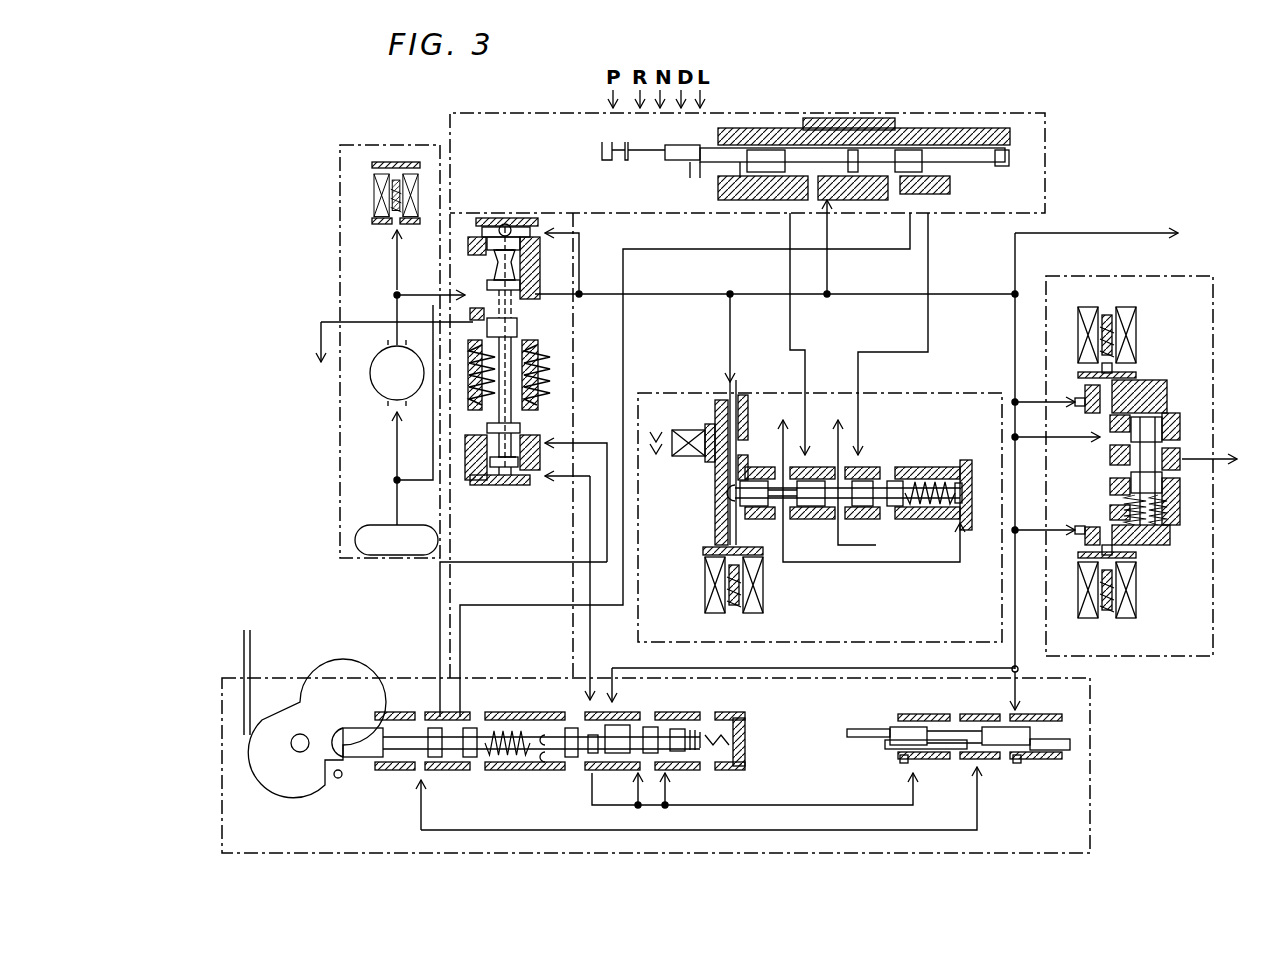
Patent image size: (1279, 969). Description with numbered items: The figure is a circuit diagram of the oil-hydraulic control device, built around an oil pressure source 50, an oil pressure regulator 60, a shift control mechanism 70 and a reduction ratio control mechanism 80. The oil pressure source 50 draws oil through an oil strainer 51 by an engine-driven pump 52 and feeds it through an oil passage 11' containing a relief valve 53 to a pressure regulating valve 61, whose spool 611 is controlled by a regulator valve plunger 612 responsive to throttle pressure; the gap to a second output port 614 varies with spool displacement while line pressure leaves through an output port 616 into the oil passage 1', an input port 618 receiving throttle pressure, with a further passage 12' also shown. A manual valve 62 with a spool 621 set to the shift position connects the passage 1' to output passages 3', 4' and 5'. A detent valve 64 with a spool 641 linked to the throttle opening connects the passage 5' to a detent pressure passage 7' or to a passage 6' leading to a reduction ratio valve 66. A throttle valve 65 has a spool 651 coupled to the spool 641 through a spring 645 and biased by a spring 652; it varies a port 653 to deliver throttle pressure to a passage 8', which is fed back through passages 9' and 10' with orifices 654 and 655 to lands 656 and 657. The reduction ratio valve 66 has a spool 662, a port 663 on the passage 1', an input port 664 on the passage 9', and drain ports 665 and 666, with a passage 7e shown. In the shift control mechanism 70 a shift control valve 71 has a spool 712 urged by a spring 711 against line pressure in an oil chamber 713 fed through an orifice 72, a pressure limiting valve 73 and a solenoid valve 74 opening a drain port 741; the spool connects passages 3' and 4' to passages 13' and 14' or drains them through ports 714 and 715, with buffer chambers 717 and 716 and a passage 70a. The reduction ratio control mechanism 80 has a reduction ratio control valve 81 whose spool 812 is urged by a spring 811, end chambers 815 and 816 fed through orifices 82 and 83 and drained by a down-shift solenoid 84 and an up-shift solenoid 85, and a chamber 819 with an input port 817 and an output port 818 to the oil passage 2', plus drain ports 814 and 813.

The oil pressure source 50 is at (362, 145).
The oil strainer 51 is at (376, 525).
The pump 52 is at (373, 358).
The relief valve 53 is at (398, 204).
The oil pressure regulator 60 is at (354, 672).
The pressure regulating valve 61 is at (514, 222).
The spool 611 is at (518, 330).
The regulator valve plunger 612 is at (520, 420).
The second output port 614 is at (470, 324).
The output port 616 is at (519, 256).
The input port 618 is at (522, 485).
The manual valve 62 is at (767, 128).
The spool 621 is at (686, 142).
The detent valve 64 is at (449, 770).
The spool 641 is at (372, 758).
The spring 645 is at (524, 714).
The throttle valve 65 is at (571, 760).
The spool 651 is at (556, 762).
The spring 652 is at (731, 756).
The port 653 is at (620, 722).
The orifice 654 is at (666, 812).
The orifice 655 is at (600, 758).
The land 656 is at (682, 729).
The land 657 is at (650, 726).
The reduction ratio valve 66 is at (1044, 758).
The spool 662 is at (858, 726).
The port 663 is at (1030, 720).
The input port 664 is at (904, 766).
The drain port 665 is at (956, 761).
The drain port 666 is at (890, 752).
The shift control mechanism 70 is at (936, 384).
The oil passage 70a is at (888, 720).
The shift control valve 71 is at (900, 477).
The spring 711 is at (945, 480).
The spool 712 is at (783, 478).
The oil chamber 713 is at (730, 494).
The drain port 714 is at (776, 516).
The drain port 715 is at (826, 517).
The oil chamber 716 is at (882, 518).
The oil chamber 717 is at (956, 518).
The orifice 72 is at (743, 412).
The pressure limiting valve 73 is at (678, 426).
The solenoid valve 74 is at (702, 588).
The drain port 741 is at (708, 543).
The oil passage 7e is at (845, 736).
The reduction ratio control mechanism 80 is at (1190, 276).
The reduction ratio control valve 81 is at (1164, 530).
The spring 811 is at (1173, 496).
The spool 812 is at (1170, 400).
The drain port 813 is at (1111, 505).
The drain port 814 is at (1111, 482).
The oil chamber 815 is at (1144, 542).
The oil chamber 816 is at (1150, 386).
The input port 817 is at (1112, 436).
The output port 818 is at (1170, 452).
The oil chamber 819 is at (1108, 459).
The orifice 82 is at (1078, 528).
The orifice 83 is at (1076, 400).
The down-shift solenoid 84 is at (1140, 604).
The up-shift solenoid 85 is at (1136, 314).
The oil passage 1' is at (880, 432).
The oil passage 2' is at (1241, 442).
The output oil passage 3' is at (765, 234).
The output oil passage 4' is at (905, 335).
The output oil passage 5' is at (686, 462).
The oil passage 6' is at (989, 796).
The detent pressure output oil passage 7' is at (504, 556).
The throttle pressure output oil passage 8' is at (575, 632).
The output oil pressure feedback passage 9' is at (686, 791).
The output oil pressure feedback oil passage 10' is at (620, 820).
The oil passage 11' is at (414, 276).
The oil passage 12' is at (366, 300).
The oil passage 13' is at (765, 436).
The oil passage 14' is at (822, 436).